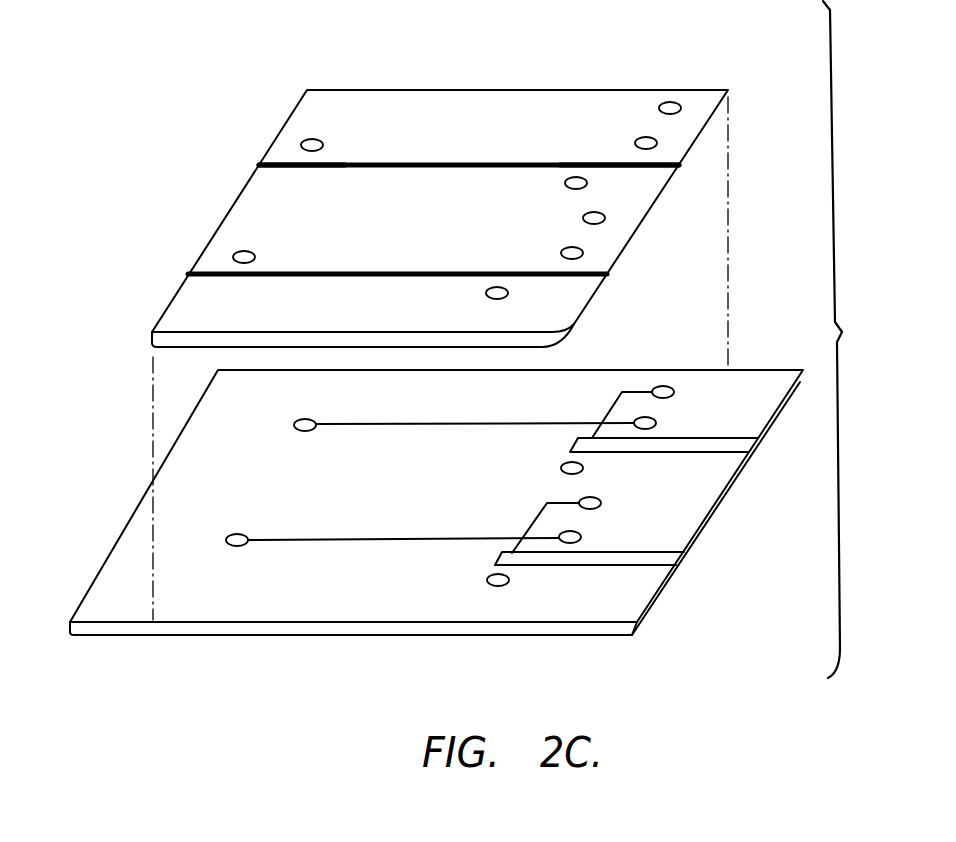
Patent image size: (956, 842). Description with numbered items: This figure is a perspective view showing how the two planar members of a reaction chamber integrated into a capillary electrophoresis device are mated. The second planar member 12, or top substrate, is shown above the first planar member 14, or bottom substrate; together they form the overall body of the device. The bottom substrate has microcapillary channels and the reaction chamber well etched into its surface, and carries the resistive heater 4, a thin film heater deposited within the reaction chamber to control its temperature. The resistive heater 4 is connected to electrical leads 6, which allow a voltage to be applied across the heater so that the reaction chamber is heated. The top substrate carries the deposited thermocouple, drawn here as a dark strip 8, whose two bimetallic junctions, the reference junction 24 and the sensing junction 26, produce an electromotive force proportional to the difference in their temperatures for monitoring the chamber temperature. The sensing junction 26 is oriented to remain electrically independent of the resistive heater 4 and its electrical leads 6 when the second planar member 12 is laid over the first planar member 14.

The second planar member 12 is at (292, 62).
The channel strip 8 is at (467, 154).
The reference junction 24 is at (337, 168).
The sensing junction 26 is at (568, 168).
The first planar member 14 is at (112, 532).
The resistive heater 4 is at (592, 440).
The electrical leads 6 is at (648, 551).